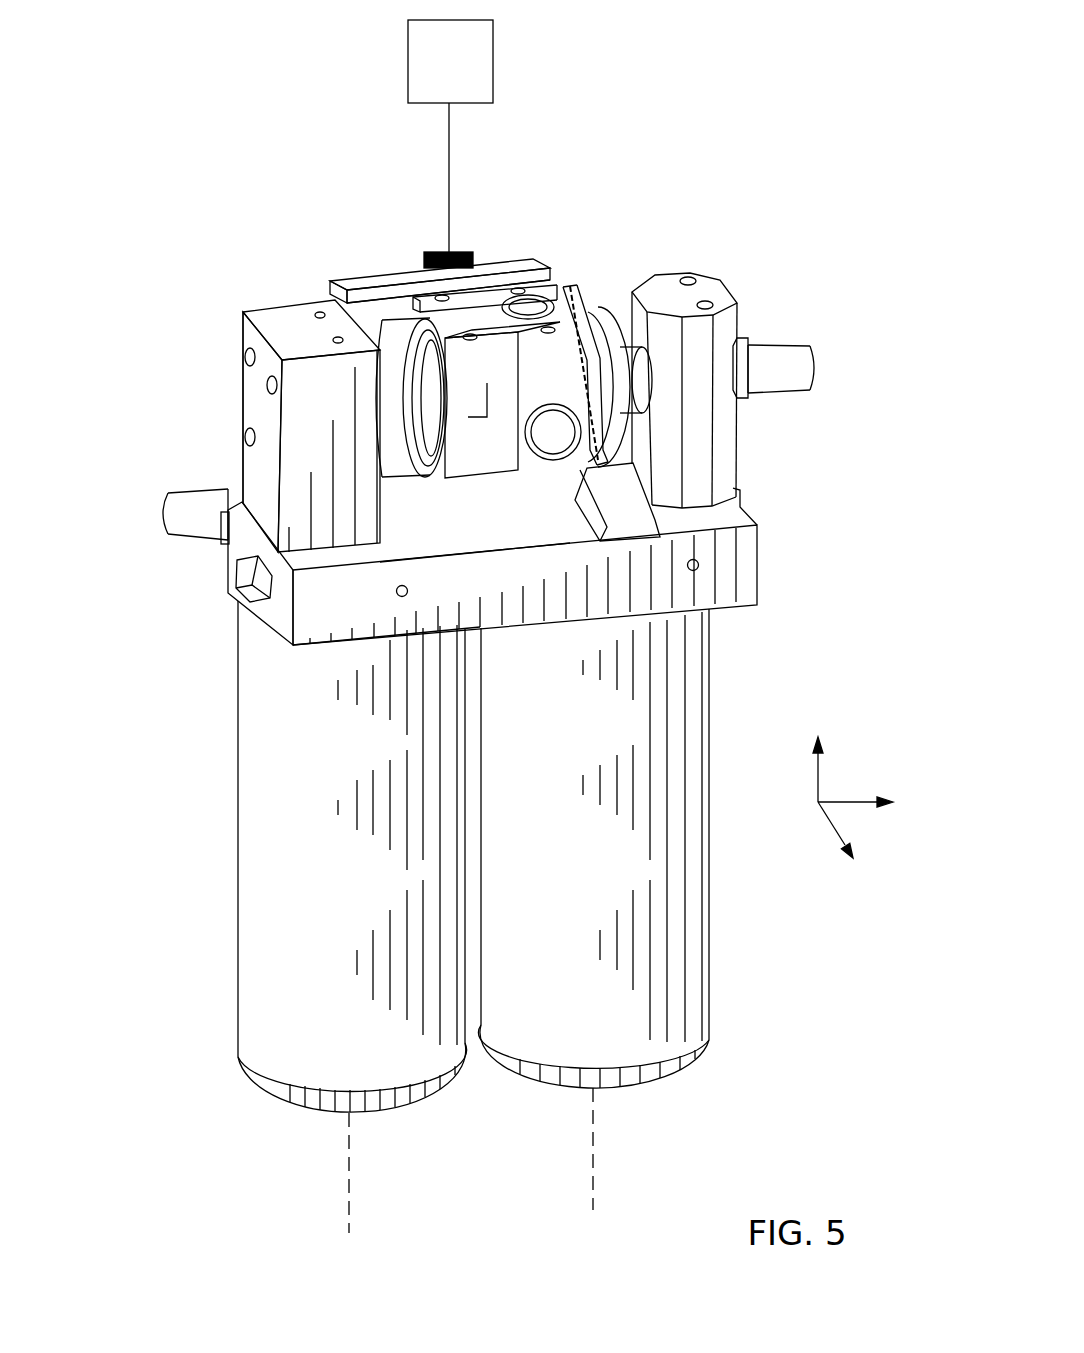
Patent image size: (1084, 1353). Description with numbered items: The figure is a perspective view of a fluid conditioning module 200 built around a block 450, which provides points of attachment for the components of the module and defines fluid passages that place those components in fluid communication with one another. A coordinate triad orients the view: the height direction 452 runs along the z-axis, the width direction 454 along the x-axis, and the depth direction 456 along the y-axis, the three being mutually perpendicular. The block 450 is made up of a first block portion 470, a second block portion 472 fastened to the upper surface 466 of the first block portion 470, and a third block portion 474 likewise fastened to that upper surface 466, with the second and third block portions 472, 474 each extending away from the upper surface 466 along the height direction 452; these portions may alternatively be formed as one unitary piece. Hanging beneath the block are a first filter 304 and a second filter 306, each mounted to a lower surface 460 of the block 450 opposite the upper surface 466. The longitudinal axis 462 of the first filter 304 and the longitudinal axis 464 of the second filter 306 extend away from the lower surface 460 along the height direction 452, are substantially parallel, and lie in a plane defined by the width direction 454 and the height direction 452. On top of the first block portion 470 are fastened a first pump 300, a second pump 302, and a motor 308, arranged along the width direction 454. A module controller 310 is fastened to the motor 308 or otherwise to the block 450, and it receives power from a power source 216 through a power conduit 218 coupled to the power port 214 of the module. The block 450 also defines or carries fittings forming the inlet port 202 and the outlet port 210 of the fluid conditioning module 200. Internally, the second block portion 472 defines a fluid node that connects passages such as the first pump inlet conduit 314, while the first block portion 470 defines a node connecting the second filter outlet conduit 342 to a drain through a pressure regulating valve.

The fluid conditioning module 200 is at (720, 122).
The inlet port 202 is at (816, 370).
The outlet port 210 is at (165, 500).
The power port 214 is at (464, 252).
The power source 216 is at (432, 72).
The power conduit 218 is at (449, 148).
The first pump 300 is at (602, 306).
The second pump 302 is at (270, 312).
The first filter 304 is at (574, 877).
The second filter 306 is at (293, 905).
The motor 308 is at (538, 296).
The module controller 310 is at (368, 281).
The first pump inlet conduit 314 is at (792, 395).
The second filter outlet conduit 342 is at (188, 540).
The block 450 is at (146, 432).
The height direction 452 is at (812, 765).
The width direction 454 is at (850, 800).
The depth direction 456 is at (830, 830).
The lower surface 460 is at (323, 645).
The longitudinal axis of the first filter 462 is at (595, 1160).
The longitudinal axis of the second filter 464 is at (348, 1180).
The upper surface 466 is at (463, 528).
The first block portion 470 is at (759, 556).
The second block portion 472 is at (662, 273).
The third block portion 474 is at (243, 385).